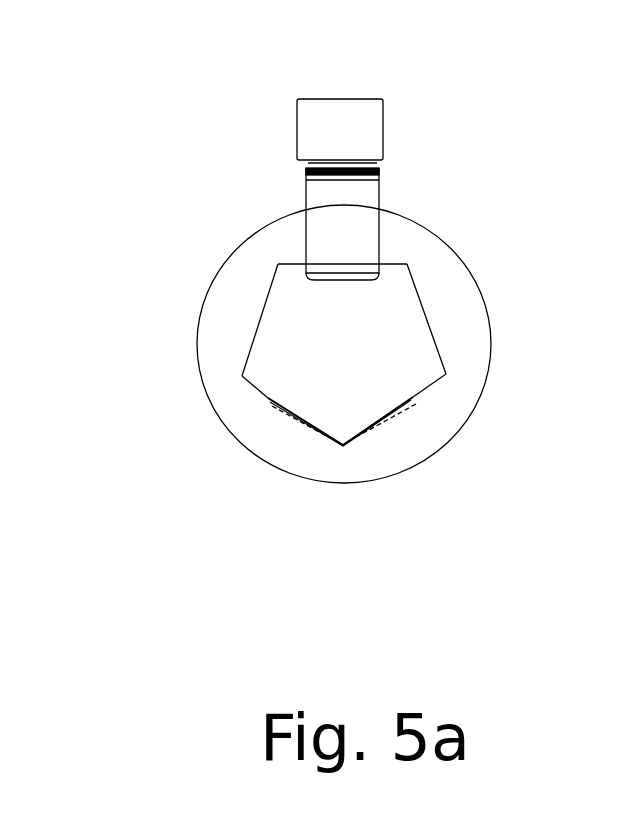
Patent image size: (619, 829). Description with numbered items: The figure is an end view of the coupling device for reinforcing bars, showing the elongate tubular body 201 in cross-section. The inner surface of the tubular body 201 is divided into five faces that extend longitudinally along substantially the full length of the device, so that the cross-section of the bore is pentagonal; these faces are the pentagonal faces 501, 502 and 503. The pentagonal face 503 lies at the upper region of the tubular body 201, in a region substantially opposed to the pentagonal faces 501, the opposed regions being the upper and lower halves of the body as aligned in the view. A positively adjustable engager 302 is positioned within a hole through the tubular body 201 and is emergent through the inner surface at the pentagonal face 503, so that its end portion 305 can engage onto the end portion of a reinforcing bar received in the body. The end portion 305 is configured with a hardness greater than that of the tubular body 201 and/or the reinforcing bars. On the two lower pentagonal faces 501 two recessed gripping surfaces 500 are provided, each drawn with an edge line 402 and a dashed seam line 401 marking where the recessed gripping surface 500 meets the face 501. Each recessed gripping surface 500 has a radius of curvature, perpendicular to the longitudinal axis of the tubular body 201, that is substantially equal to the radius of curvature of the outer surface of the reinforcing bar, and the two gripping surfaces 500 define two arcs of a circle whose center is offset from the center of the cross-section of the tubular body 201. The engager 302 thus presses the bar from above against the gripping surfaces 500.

The elongate tubular body 201 is at (442, 285).
The positively adjustable engager 302 is at (393, 91).
The end portion of engager 305 is at (347, 278).
The pentagonal face 503 is at (290, 263).
The pentagonal face 502 is at (252, 345).
The pentagonal face 501 is at (247, 384).
The insert edge 402 is at (277, 405).
The weld seam edge 401 is at (292, 424).
The recessed gripping surface 500 is at (297, 434).